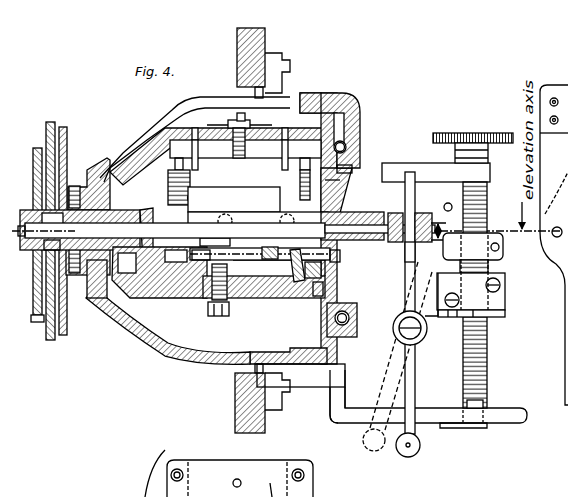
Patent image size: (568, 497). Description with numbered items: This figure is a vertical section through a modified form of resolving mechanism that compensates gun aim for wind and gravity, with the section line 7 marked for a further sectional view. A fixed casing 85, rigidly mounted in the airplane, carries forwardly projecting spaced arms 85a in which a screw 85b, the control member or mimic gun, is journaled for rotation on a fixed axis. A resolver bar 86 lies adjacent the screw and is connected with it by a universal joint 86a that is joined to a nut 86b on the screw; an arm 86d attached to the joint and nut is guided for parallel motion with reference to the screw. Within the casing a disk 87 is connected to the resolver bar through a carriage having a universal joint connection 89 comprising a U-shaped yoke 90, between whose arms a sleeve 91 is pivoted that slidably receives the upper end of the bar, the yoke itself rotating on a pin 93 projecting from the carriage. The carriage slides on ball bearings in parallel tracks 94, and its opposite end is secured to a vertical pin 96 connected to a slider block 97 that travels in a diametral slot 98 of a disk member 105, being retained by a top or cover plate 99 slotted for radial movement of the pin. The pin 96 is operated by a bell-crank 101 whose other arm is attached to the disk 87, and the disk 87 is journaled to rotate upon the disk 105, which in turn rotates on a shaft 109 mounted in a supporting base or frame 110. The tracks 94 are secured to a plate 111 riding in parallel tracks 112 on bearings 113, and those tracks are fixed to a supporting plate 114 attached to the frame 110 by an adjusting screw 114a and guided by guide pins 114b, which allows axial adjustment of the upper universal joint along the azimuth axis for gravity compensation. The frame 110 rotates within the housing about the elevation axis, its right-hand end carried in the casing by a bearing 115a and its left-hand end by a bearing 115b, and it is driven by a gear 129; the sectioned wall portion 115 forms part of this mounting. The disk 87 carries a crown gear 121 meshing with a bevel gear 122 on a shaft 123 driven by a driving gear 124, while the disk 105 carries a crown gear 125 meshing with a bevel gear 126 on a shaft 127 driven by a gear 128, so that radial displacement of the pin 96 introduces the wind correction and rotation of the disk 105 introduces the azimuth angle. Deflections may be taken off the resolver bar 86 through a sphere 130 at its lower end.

The section line 7— 7 is at (216, 230).
The fixed casing 85 is at (167, 356).
The forwardly projecting spaced arms 85a is at (411, 163).
The screw 85b is at (486, 364).
The resolver bar 86 is at (415, 391).
The universal joint 86a is at (420, 340).
The nut 86b is at (500, 300).
The arm 86d is at (487, 318).
The disk 87 is at (330, 270).
The universal joint connection 89 is at (418, 212).
The U-shaped yoke 90 is at (403, 240).
The sleeve 91 is at (449, 203).
The pin 93 is at (366, 206).
The parallel tracks 94 is at (282, 157).
The pin 96 is at (190, 219).
The slider block 97 is at (197, 255).
The diametral slot 98 is at (252, 259).
The top or cover plate 99 is at (180, 255).
The bell-crank 101 is at (200, 243).
The disk member 105 is at (330, 288).
The shaft 109 is at (229, 304).
The supporting base or frame 110 is at (307, 290).
The plate 111 is at (245, 155).
The parallel tracks 112 is at (180, 152).
The bearings 113 is at (347, 165).
The supporting plate 114 is at (353, 148).
The adjusting screw 114a is at (248, 118).
The guide pins 114b is at (178, 128).
The wall 115 is at (333, 190).
The bearing 115a is at (365, 117).
The bearing 115b is at (100, 263).
The crown gear 121 is at (289, 251).
The bevel gear 122 is at (147, 208).
The shaft 123 is at (33, 215).
The driving gear 124 is at (35, 318).
The crown gear 125 is at (340, 257).
The bevel gear 126 is at (138, 208).
The shaft 127 is at (53, 248).
The gear 128 is at (51, 342).
The gear 129 is at (64, 338).
The sphere 130 is at (400, 453).